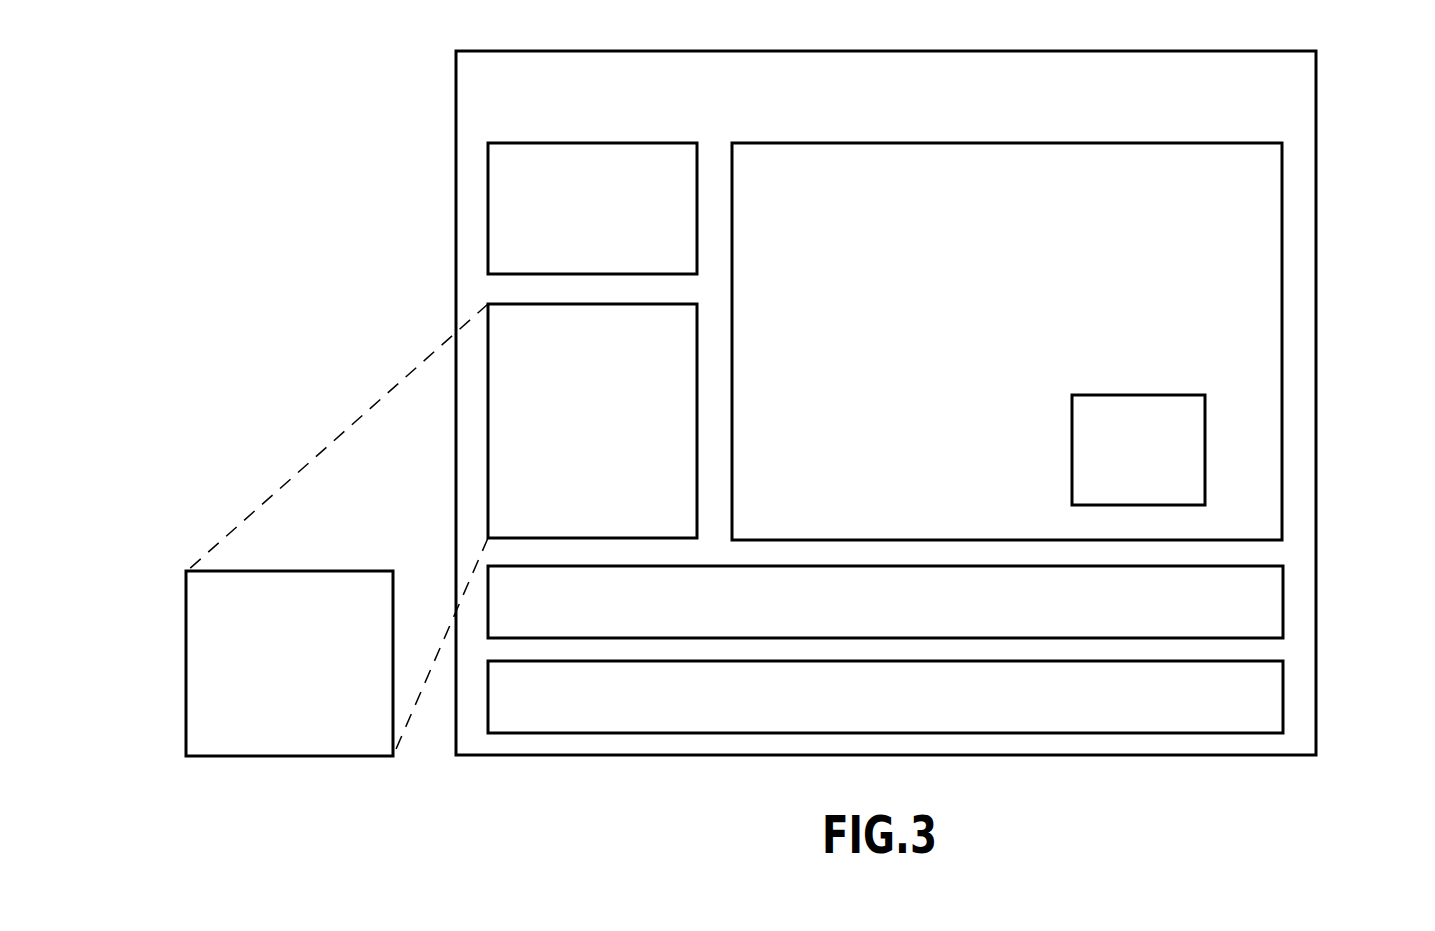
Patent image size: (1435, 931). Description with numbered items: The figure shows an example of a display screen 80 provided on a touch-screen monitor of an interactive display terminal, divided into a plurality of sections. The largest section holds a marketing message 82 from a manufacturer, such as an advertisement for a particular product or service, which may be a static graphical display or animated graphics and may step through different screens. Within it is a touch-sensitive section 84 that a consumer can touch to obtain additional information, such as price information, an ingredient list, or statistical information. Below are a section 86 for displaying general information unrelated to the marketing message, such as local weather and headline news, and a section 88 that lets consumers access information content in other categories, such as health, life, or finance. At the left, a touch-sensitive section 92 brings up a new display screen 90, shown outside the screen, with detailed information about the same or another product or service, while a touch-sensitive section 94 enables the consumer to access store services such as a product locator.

The display screen 80 is at (1318, 118).
The marketing message 82 is at (970, 143).
The touch-sensitive section 84 is at (1137, 395).
The section for displaying general information 86 is at (1283, 600).
The section for accessing information content in other categories 88 is at (1283, 695).
The new display screen 90 is at (186, 663).
The touch-sensitive section 92 is at (488, 372).
The touch-sensitive section 94 is at (592, 143).